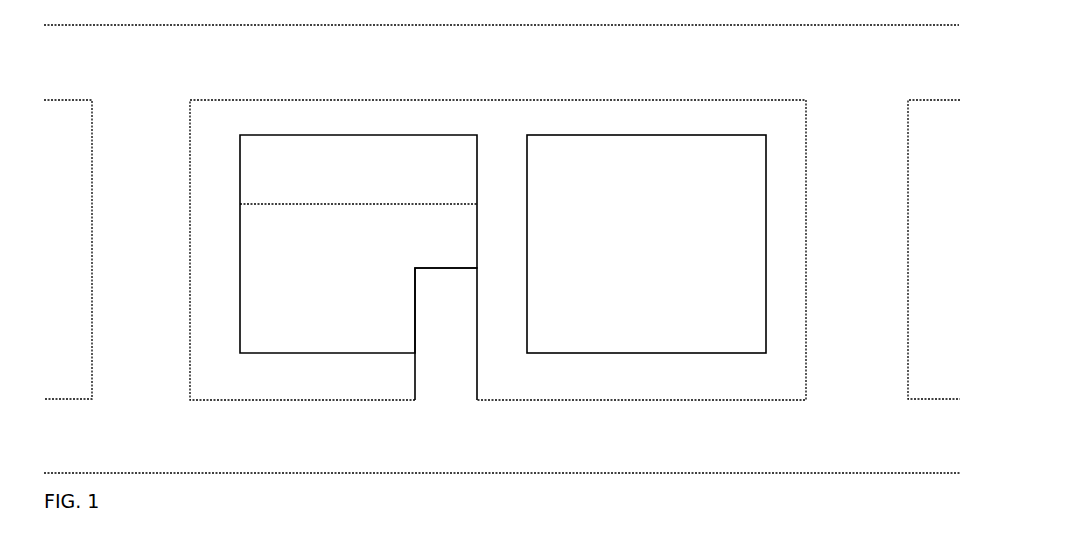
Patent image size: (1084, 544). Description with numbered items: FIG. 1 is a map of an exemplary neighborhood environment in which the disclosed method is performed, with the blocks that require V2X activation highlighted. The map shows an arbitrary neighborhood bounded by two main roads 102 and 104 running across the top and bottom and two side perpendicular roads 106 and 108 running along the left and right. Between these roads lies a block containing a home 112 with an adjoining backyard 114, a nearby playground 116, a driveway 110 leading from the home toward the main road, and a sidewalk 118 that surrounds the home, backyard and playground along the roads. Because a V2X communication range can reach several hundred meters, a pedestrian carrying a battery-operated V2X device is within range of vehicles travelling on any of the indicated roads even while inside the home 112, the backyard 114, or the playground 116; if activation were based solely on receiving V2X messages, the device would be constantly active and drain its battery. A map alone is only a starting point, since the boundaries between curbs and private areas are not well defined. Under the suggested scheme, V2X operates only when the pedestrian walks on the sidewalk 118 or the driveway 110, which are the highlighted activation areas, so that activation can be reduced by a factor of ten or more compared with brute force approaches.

The main road 102 is at (501, 55).
The main road 104 is at (502, 444).
The side perpendicular road 106 is at (103, 249).
The side perpendicular road 108 is at (897, 249).
The driveway 110 is at (446, 334).
The home 112 is at (358, 244).
The backyard 114 is at (358, 176).
The playground 116 is at (646, 244).
The sidewalk 118 is at (498, 250).